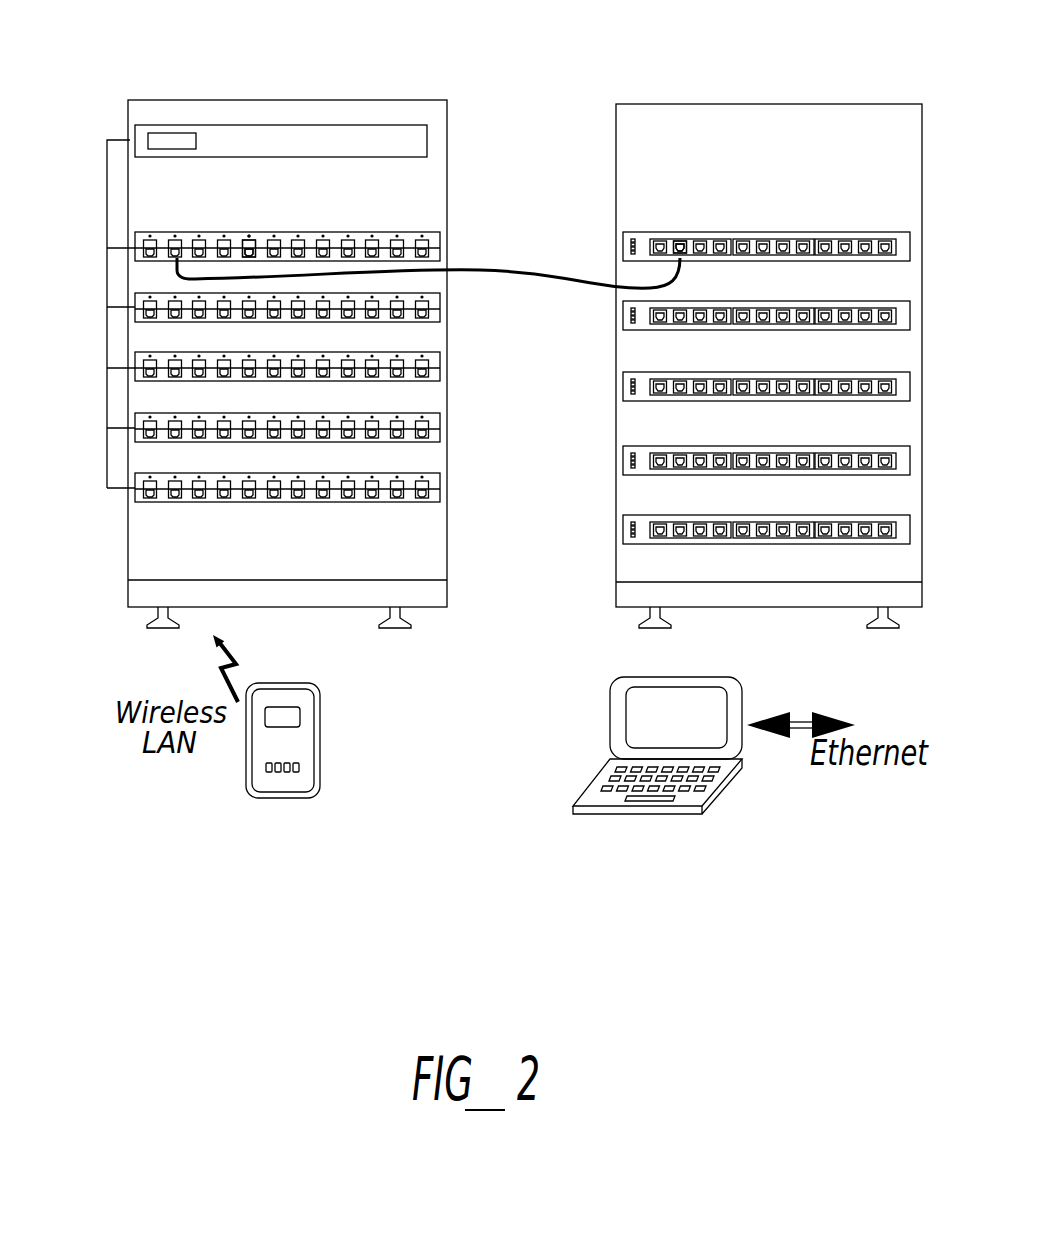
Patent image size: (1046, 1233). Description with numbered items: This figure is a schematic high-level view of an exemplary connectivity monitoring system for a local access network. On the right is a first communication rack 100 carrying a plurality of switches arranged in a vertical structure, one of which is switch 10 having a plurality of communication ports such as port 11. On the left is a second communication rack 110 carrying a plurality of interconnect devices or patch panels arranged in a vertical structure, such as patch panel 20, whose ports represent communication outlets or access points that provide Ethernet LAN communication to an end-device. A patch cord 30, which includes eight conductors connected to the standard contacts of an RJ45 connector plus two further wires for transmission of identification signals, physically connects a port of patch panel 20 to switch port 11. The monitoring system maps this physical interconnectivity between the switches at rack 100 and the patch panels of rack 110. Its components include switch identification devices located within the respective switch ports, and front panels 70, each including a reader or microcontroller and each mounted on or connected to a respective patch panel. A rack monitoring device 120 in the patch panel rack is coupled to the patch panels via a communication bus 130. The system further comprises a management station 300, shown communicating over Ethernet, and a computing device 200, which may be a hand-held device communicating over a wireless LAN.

The first communication rack 100 is at (812, 118).
The switch 10 is at (843, 228).
The switch port 11 is at (678, 232).
The second communication rack 110 is at (280, 110).
The rack monitoring device 120 is at (363, 142).
The communication bus 130 is at (102, 185).
The front panel 70 is at (184, 233).
The patch panel 20 is at (265, 248).
The patch cord 30 is at (518, 280).
The computing device 200 is at (327, 763).
The management station 300 is at (590, 772).